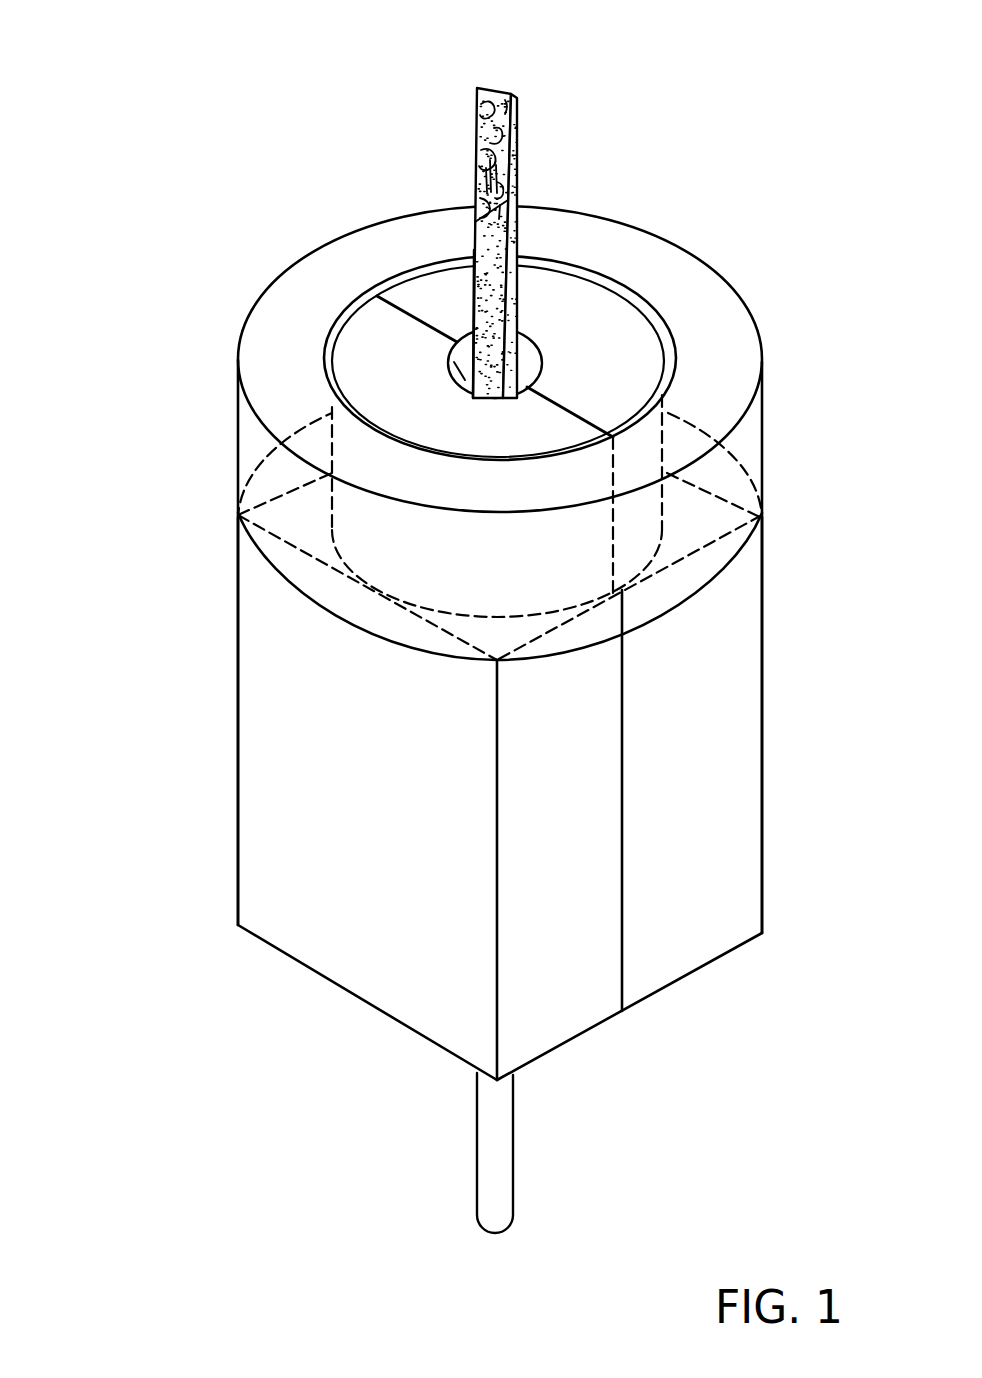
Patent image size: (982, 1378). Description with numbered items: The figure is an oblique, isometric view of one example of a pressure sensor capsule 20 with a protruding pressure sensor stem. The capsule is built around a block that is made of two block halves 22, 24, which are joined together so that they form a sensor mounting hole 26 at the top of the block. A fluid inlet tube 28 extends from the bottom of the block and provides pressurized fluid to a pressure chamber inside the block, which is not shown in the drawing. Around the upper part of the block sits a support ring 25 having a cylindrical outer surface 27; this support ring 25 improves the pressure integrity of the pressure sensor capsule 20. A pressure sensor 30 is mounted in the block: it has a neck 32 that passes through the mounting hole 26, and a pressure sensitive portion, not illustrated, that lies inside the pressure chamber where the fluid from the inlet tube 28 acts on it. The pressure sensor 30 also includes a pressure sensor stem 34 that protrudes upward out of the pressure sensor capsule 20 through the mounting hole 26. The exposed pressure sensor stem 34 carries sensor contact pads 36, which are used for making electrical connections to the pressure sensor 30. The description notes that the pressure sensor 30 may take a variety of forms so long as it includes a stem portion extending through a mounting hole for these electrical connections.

The pressure sensor capsule 20 is at (170, 112).
The block half 22 is at (572, 843).
The block half 24 is at (703, 787).
The support ring 25 is at (735, 293).
The sensor mounting hole 26 is at (455, 350).
The cylindrical outer surface 27 is at (763, 447).
The fluid inlet tube 28 is at (477, 1135).
The pressure sensor 30 is at (473, 245).
The neck 32 is at (470, 398).
The pressure sensor stem 34 is at (517, 102).
The sensor contact pads 36 is at (477, 150).